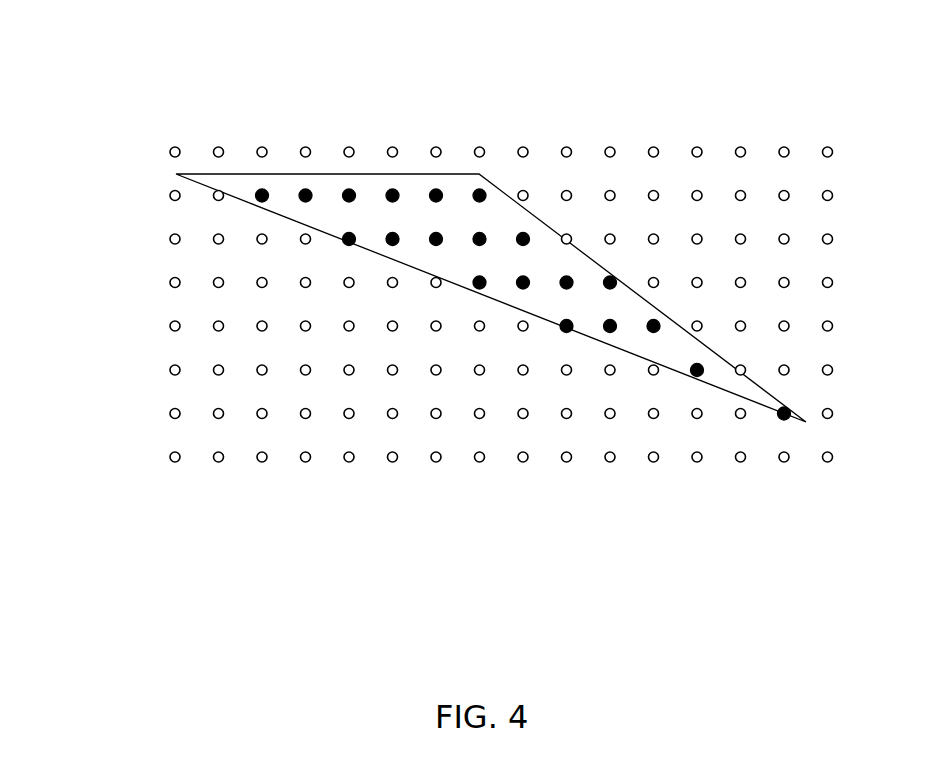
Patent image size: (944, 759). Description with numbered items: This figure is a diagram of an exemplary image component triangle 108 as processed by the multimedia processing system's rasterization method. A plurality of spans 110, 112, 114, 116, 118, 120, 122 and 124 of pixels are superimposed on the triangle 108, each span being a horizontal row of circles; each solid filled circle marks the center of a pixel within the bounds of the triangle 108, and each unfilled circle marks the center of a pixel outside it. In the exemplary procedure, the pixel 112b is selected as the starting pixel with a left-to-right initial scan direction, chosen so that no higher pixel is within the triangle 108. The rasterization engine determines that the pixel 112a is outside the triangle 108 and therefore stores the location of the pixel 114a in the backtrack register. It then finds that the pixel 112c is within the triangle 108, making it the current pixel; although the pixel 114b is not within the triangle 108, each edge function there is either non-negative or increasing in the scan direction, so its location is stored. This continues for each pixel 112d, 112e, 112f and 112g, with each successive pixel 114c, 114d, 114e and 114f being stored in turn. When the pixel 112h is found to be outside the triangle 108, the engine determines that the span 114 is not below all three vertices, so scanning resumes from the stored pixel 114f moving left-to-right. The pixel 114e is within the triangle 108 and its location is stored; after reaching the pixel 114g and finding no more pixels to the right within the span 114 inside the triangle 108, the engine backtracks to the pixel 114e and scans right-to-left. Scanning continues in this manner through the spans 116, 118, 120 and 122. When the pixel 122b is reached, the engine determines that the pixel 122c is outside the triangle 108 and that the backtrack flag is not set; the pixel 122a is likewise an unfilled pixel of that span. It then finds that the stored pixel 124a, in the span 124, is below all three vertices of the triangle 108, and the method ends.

The image component triangle 108 is at (653, 303).
The span 110 is at (140, 152).
The span 112 is at (140, 196).
The pixel 112a is at (215, 191).
The pixel 112b is at (259, 191).
The pixel 112c is at (304, 190).
The pixel 112d is at (350, 190).
The pixel 112e is at (394, 190).
The pixel 112f is at (438, 190).
The pixel 112g is at (481, 191).
The pixel 112h is at (526, 191).
The span 114 is at (140, 239).
The pixel 114a is at (259, 245).
The pixel 114b is at (303, 245).
The pixel 114c is at (347, 245).
The pixel 114d is at (391, 245).
The pixel 114e is at (434, 245).
The pixel 114f is at (482, 245).
The pixel 114g is at (526, 236).
The span 116 is at (140, 282).
The span 118 is at (140, 326).
The span 120 is at (140, 370).
The span 122 is at (140, 414).
The pixel 122a is at (739, 420).
The pixel 122b is at (786, 420).
The pixel 122c is at (829, 420).
The span 124 is at (140, 457).
The pixel 124a is at (783, 463).